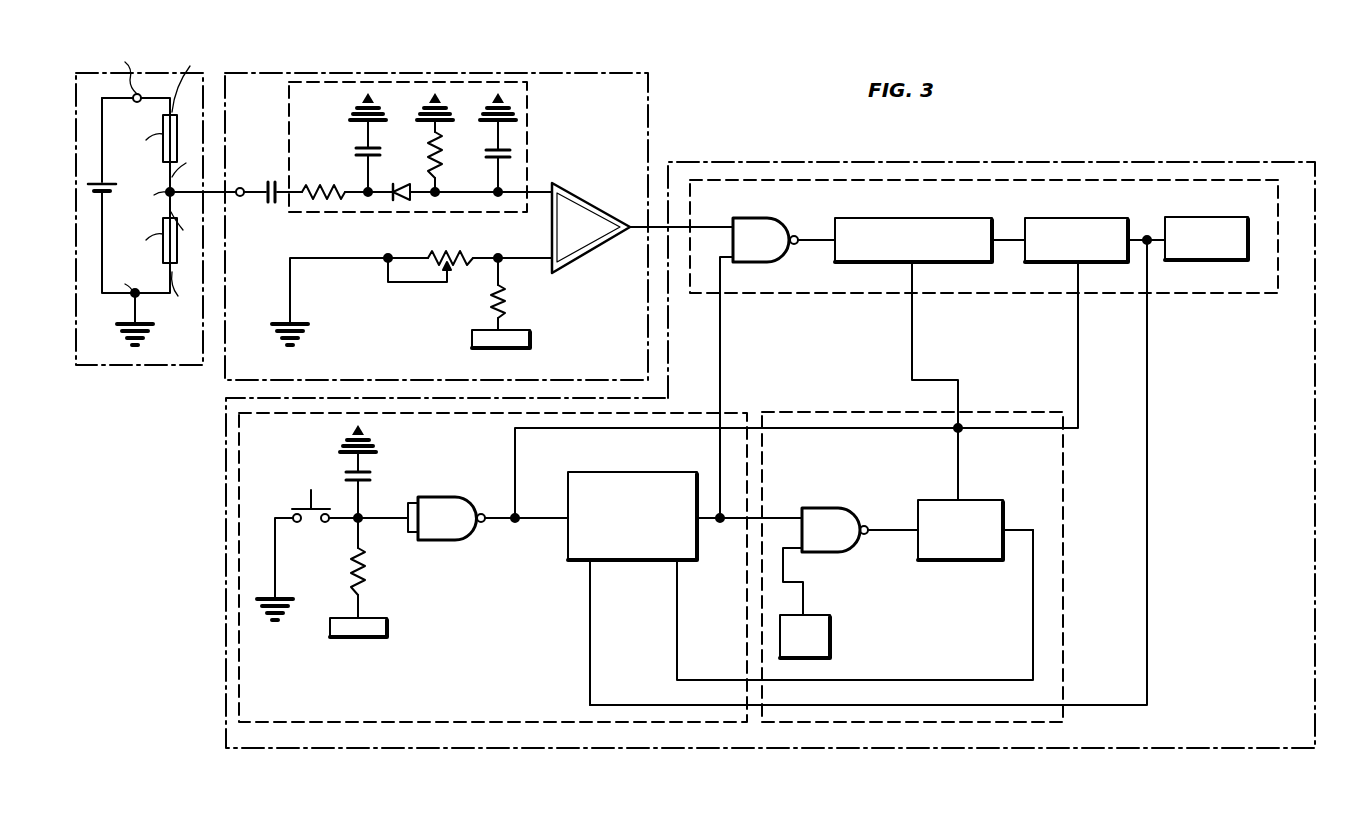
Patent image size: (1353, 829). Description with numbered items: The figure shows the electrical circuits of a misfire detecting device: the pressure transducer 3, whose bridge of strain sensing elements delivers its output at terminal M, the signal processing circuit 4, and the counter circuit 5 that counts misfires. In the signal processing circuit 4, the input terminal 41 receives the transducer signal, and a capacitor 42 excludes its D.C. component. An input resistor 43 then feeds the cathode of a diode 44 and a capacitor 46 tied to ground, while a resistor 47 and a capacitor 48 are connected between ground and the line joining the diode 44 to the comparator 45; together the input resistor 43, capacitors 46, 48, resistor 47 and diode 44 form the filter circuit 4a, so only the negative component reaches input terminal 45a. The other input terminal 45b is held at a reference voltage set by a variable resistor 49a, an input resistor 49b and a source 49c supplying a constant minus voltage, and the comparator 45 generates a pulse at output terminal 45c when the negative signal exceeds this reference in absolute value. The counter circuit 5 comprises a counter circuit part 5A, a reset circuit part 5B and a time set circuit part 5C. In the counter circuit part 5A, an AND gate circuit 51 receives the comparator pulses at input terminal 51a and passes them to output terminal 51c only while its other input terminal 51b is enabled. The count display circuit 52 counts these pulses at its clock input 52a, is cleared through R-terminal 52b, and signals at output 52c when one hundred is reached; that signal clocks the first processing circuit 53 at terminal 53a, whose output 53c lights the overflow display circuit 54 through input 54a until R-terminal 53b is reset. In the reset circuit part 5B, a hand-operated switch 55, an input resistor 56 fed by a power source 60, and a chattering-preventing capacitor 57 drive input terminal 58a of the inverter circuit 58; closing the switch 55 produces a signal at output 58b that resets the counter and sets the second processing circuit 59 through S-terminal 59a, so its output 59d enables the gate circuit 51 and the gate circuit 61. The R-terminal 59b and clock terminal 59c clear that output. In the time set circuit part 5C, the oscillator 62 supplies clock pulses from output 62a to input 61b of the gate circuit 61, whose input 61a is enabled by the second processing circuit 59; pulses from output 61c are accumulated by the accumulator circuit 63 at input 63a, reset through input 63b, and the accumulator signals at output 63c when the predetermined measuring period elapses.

The pressure transducer 3 is at (163, 82).
The signal processing circuit 4 is at (550, 88).
The filter circuit 4a is at (289, 102).
The input terminal 41 is at (246, 188).
The capacitor 42 is at (267, 206).
The input resistor 43 is at (320, 188).
The diode 44 is at (406, 188).
The comparator 45 is at (592, 214).
The input terminal of comparator 45a is at (540, 190).
The other input terminal of comparator 45b is at (540, 247).
The output terminal of comparator 45c is at (633, 236).
The capacitor 46 is at (357, 151).
The resistor 47 is at (430, 158).
The capacitor 48 is at (488, 152).
The variable resistor 49a is at (455, 252).
The input resistor 49b is at (492, 296).
The source 49c is at (530, 340).
The counter circuit 5 is at (1316, 222).
The counter circuit part 5A is at (841, 292).
The reset circuit part 5B is at (238, 606).
The time set circuit part 5C is at (1062, 578).
The gate circuit 51 is at (772, 227).
The input terminal of gate circuit 51a is at (730, 206).
The input terminal of gate circuit 51b is at (723, 258).
The output terminal of gate circuit 51c is at (795, 247).
The count display circuit 52 is at (908, 226).
The input terminal of count display circuit 52a is at (827, 234).
The other input terminal of count display circuit 52b is at (914, 283).
The output terminal of count display circuit 52c is at (994, 236).
The first processing circuit 53 is at (1095, 225).
The clock terminal of first processing circuit 53a is at (1014, 240).
The R-terminal of first processing circuit 53b is at (1077, 275).
The output terminal of first processing circuit 53c is at (1136, 235).
The overflow display circuit 54 is at (1222, 225).
The input terminal of overflow display circuit 54a is at (1150, 248).
The switch 55 is at (295, 510).
The input resistor 56 is at (365, 560).
The capacitor 57 is at (350, 476).
The inverter circuit 58 is at (448, 538).
The input terminal of inverter circuit 58a is at (410, 500).
The output terminal of inverter circuit 58b is at (484, 512).
The second processing circuit 59 is at (626, 488).
The S-terminal of second processing circuit 59a is at (552, 511).
The R-terminal of second processing circuit 59b is at (590, 574).
The clock terminal of second processing circuit 59c is at (677, 586).
The output terminal of second processing circuit 59d is at (701, 521).
The power source 60 is at (387, 627).
The gate circuit 61 is at (815, 516).
The input terminal of gate circuit 61a is at (790, 514).
The other input terminal of gate circuit 61b is at (799, 561).
The output terminal of gate circuit 61c is at (870, 527).
The oscillator 62 is at (830, 640).
The output terminal of oscillator 62a is at (808, 606).
The accumulator circuit 63 is at (963, 550).
The input terminal of accumulator circuit 63a is at (912, 532).
The other input terminal of accumulator circuit 63b is at (957, 493).
The output terminal of accumulator circuit 63c is at (1008, 529).